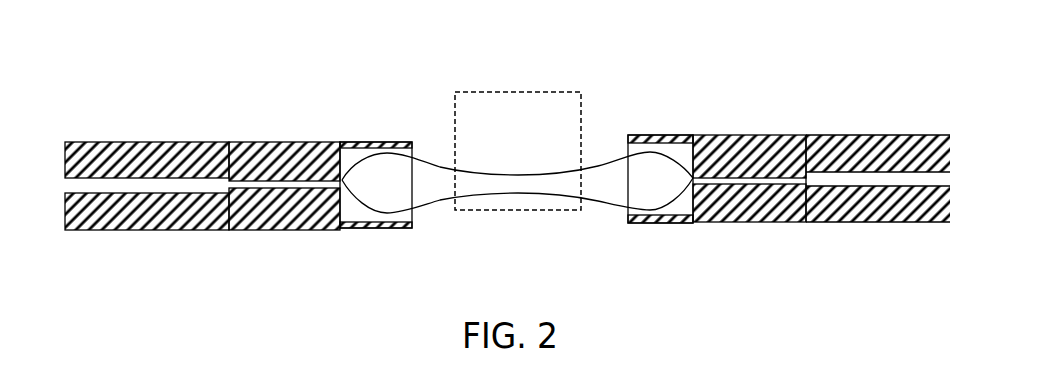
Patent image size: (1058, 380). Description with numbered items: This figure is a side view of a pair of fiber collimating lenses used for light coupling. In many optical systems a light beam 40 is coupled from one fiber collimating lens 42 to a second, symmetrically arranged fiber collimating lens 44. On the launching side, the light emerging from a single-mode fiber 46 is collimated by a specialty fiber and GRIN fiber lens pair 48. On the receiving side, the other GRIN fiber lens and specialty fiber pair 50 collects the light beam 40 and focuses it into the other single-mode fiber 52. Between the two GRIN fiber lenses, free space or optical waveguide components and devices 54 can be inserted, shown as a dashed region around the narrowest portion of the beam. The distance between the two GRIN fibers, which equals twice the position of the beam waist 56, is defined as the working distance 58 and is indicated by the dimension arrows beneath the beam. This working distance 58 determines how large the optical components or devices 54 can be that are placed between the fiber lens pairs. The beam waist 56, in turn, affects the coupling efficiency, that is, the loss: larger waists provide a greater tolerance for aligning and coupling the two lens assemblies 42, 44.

The light beam 40 is at (417, 148).
The fiber collimating lens 42 is at (238, 180).
The second fiber collimating lens 44 is at (789, 185).
The single-mode fiber 46 is at (140, 230).
The specialty fiber and GRIN fiber lens pair 48 is at (260, 238).
The GRIN fiber lens and specialty fiber pair 50 is at (665, 237).
The other single-mode fiber 52 is at (892, 222).
The optical components or devices 54 is at (548, 85).
The beam waist 56 is at (518, 210).
The working distance 58 is at (412, 240).